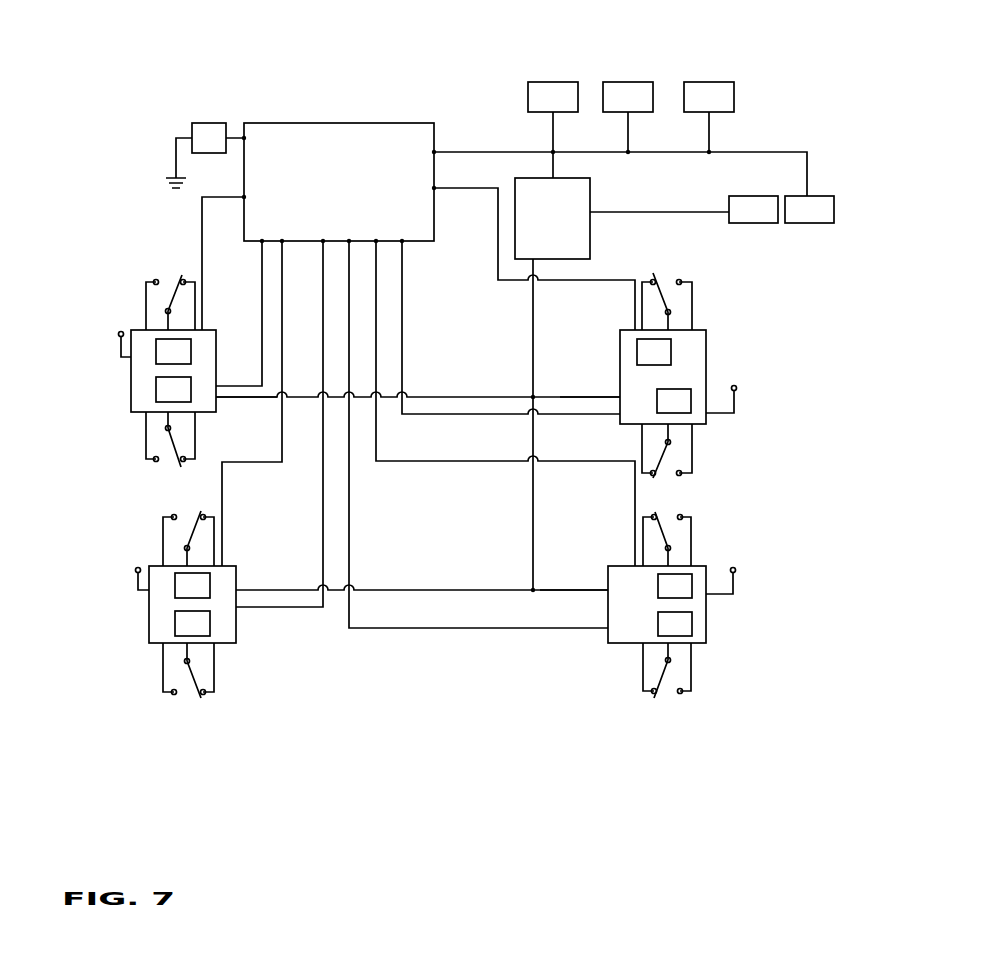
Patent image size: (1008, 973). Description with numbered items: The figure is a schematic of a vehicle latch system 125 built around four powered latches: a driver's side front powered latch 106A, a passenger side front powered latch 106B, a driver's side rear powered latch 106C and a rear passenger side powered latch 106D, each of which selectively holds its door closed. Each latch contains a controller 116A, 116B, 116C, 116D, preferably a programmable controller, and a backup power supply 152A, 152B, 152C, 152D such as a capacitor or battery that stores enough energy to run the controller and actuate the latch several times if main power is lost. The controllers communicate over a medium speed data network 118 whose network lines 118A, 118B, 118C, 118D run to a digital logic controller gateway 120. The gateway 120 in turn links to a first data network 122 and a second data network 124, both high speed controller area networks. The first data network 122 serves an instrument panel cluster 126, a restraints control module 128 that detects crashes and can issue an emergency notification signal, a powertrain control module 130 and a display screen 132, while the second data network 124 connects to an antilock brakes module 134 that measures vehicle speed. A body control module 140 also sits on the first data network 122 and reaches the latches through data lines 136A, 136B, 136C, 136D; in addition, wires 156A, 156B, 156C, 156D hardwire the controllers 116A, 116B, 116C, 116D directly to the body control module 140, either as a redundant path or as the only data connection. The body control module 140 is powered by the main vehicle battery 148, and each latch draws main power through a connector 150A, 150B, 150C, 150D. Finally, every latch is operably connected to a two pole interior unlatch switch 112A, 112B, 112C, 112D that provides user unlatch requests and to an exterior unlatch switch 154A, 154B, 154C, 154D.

The latch system 125 is at (386, 96).
The body control module 140 is at (268, 122).
The battery 148 is at (207, 137).
The first data network 122 is at (472, 150).
The instrument panel cluster 126 is at (555, 90).
The restraints control module 128 is at (628, 90).
The powertrain control module 130 is at (722, 90).
The digital logic controller gateway 120 is at (577, 242).
The second data network 124 is at (703, 213).
The antilock brakes module 134 is at (762, 218).
The display screen 132 is at (820, 218).
The medium speed data network 118 is at (533, 307).
The network line 118A is at (270, 400).
The network line 118B is at (562, 395).
The network line 118C is at (405, 588).
The network line 118D is at (555, 588).
The data line 136A is at (200, 222).
The data line 136B is at (557, 283).
The data line 136C is at (237, 467).
The data line 136D is at (447, 463).
The wire 156A is at (237, 386).
The wire 156B is at (422, 417).
The wire 156C is at (258, 610).
The wire 156D is at (502, 630).
The driver's side front powered latch 106A is at (127, 392).
The passenger side front powered latch 106B is at (711, 341).
The driver's side rear powered latch 106C is at (142, 620).
The rear passenger side powered latch 106D is at (711, 615).
The backup power supply 152A is at (163, 353).
The backup power supply 152B is at (665, 358).
The backup power supply 152C is at (183, 588).
The backup power supply 152D is at (683, 578).
The controller 116A is at (163, 392).
The controller 116B is at (685, 406).
The controller 116C is at (183, 623).
The controller 116D is at (682, 625).
The exterior unlatch switch 154A is at (168, 283).
The exterior unlatch switch 154B is at (677, 278).
The exterior unlatch switch 154C is at (188, 513).
The exterior unlatch switch 154D is at (668, 517).
The interior unlatch switch 112A is at (170, 458).
The interior unlatch switch 112B is at (675, 473).
The interior unlatch switch 112C is at (187, 690).
The interior unlatch switch 112D is at (668, 687).
The connector 150A is at (119, 333).
The connector 150B is at (736, 387).
The connector 150C is at (137, 568).
The connector 150D is at (735, 568).